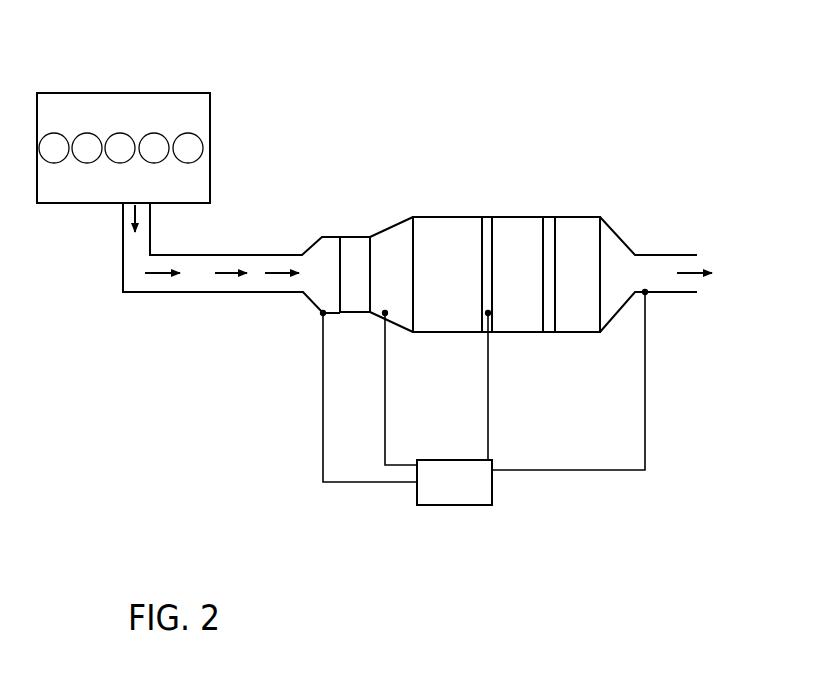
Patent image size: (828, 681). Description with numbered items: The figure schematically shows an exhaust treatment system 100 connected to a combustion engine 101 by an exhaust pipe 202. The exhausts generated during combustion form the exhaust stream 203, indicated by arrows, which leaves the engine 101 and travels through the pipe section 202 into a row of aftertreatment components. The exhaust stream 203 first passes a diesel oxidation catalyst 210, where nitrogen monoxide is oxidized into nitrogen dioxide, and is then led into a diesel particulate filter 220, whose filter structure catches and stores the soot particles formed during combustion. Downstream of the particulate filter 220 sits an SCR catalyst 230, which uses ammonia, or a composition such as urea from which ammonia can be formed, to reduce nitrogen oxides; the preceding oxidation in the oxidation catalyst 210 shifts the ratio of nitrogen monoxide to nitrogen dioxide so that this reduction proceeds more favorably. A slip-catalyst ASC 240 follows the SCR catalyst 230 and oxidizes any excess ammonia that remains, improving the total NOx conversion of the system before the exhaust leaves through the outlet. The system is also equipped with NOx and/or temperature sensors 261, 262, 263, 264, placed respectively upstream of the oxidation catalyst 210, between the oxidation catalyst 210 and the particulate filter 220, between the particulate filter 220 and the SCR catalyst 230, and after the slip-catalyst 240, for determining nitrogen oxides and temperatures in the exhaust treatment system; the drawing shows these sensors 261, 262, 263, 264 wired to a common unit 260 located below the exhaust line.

The exhaust aftertreatment system 100 is at (484, 124).
The combustion engine 101 is at (200, 120).
The exhaust pipe 202 is at (185, 292).
The exhaust stream 203 is at (273, 262).
The diesel oxidation catalyst 210 is at (362, 240).
The diesel particulate filter 220 is at (460, 226).
The SCR catalyst 230 is at (540, 232).
The slip-catalyst ASC 240 is at (592, 233).
The controller 260 is at (450, 497).
The NOx and/or temperature sensor 261 is at (318, 311).
The NOx and/or temperature sensor 262 is at (385, 314).
The NOx and/or temperature sensor 263 is at (490, 314).
The NOx and/or temperature sensor 264 is at (650, 296).